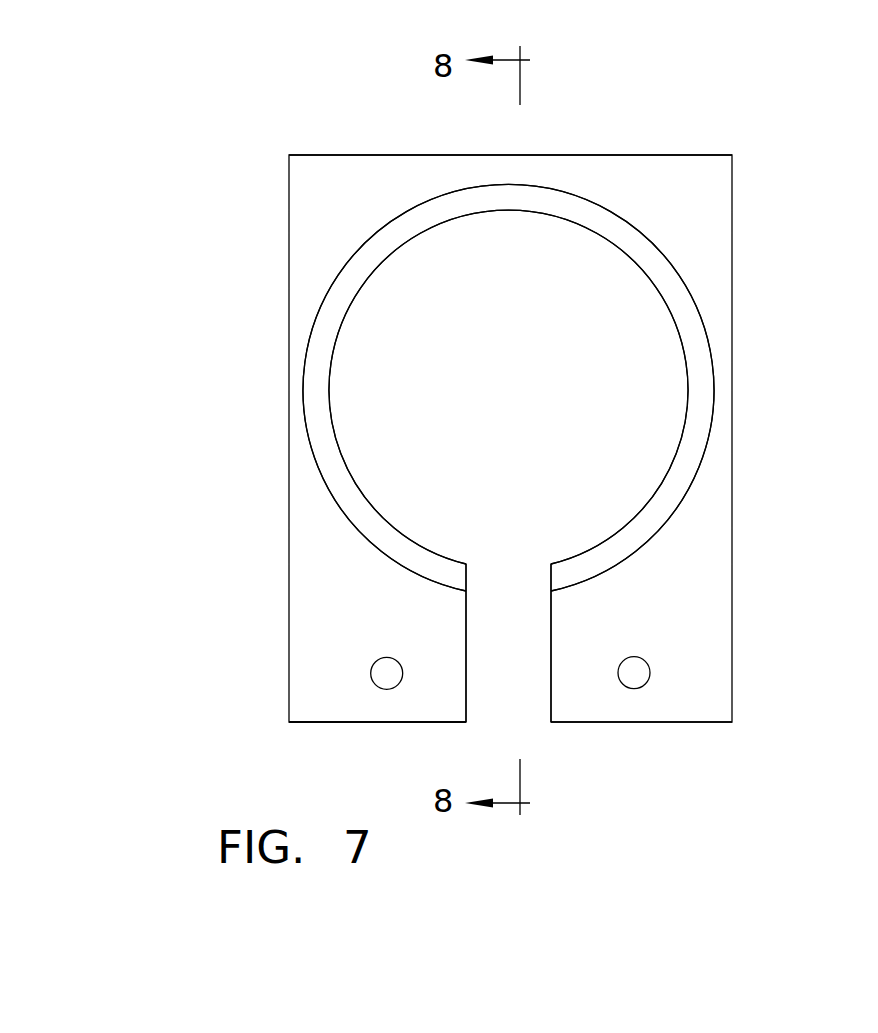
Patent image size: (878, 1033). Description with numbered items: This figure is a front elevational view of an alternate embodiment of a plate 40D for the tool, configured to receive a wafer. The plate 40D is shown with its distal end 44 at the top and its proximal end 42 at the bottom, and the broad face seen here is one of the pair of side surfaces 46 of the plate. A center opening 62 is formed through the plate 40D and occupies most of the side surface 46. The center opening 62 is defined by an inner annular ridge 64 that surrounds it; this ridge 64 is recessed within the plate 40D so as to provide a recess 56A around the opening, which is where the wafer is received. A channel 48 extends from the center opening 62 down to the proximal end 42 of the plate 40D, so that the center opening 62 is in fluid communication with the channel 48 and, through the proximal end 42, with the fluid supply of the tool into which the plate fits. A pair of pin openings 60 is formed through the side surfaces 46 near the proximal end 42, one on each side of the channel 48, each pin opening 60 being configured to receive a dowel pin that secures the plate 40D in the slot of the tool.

The plate 40D is at (737, 110).
The distal end 44 is at (313, 155).
The proximal end 42 is at (673, 724).
The side surface 46 is at (388, 606).
The channel 48 is at (529, 722).
The pin opening 60 is at (397, 683).
The center opening 62 is at (450, 385).
The inner annular ridge 64 is at (320, 413).
The recess 56A is at (330, 467).